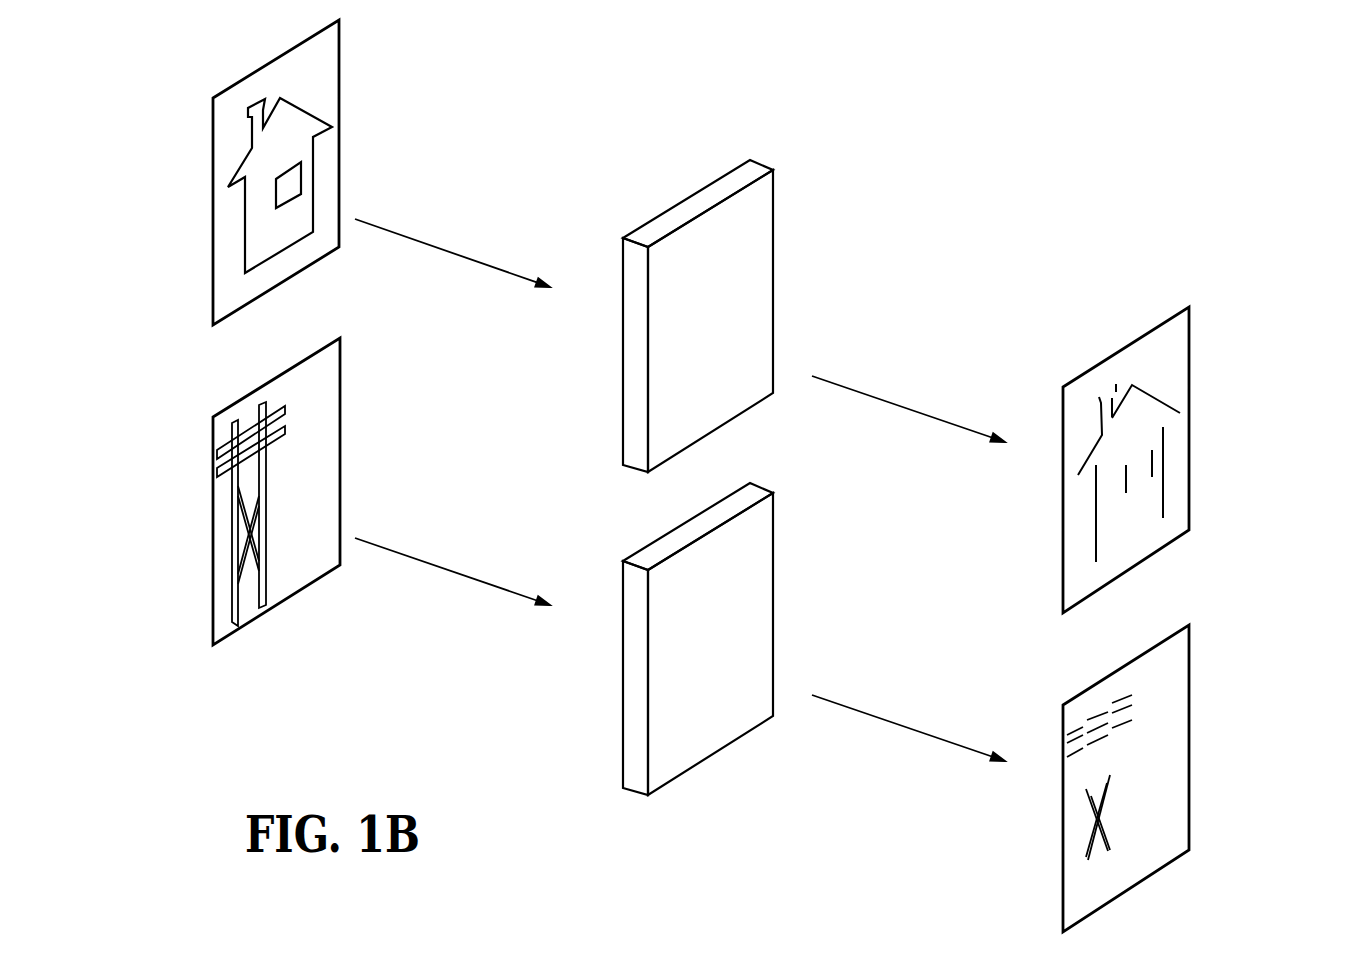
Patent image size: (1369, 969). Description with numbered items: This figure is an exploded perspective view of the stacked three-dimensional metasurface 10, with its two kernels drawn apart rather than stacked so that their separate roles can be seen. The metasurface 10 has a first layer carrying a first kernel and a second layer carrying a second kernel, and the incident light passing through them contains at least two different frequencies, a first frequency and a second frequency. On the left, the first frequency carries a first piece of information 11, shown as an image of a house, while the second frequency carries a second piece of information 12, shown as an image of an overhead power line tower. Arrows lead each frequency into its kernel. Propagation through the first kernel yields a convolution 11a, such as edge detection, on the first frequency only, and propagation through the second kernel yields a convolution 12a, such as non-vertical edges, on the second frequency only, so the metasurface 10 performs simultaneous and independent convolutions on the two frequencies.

The stacked 3D metasurface 10 is at (1006, 112).
The first piece of information 11 is at (255, 228).
The second piece of information 12 is at (237, 570).
The convolution 11a is at (1163, 488).
The convolution 12a is at (1107, 828).